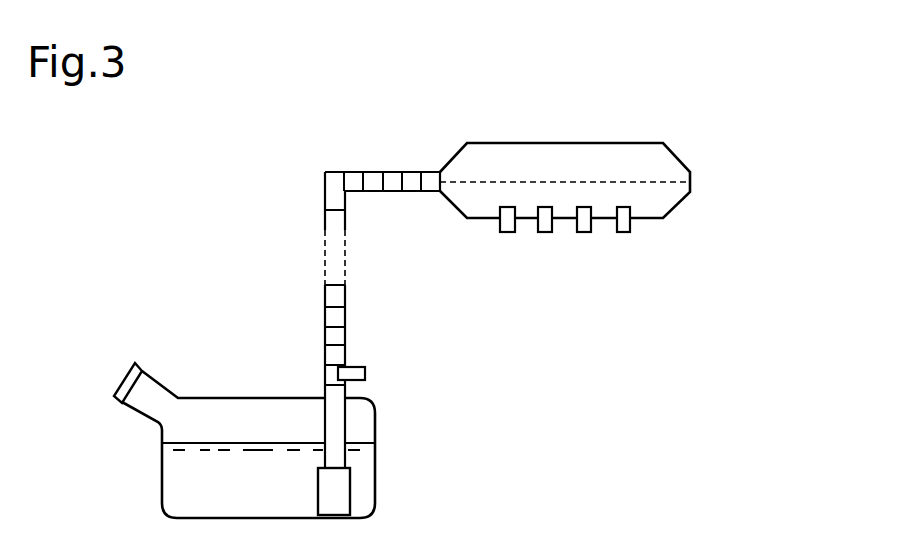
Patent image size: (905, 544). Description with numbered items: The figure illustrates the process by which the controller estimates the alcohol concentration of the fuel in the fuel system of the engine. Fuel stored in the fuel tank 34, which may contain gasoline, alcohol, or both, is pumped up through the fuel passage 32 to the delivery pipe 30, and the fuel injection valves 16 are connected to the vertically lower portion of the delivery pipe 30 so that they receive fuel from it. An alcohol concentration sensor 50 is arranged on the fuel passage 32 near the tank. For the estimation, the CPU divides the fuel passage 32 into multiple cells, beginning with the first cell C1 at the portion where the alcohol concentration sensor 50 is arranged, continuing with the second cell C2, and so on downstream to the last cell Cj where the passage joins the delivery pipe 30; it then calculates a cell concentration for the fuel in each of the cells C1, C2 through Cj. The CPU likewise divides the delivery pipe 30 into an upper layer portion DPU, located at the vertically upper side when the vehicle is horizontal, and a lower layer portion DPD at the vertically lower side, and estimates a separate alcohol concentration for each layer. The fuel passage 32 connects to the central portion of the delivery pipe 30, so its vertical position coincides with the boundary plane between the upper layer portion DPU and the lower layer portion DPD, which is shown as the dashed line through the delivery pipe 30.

The delivery pipe 30 is at (587, 137).
The upper layer portion DPU is at (658, 165).
The lower layer portion DPD is at (658, 198).
The fuel injection valve 16 is at (507, 233).
The fuel passage 32 is at (368, 355).
The cell Cj is at (437, 170).
The cell C2 is at (325, 353).
The cell C1 is at (325, 375).
The alcohol concentration sensor 50 is at (366, 375).
The fuel tank 34 is at (375, 428).